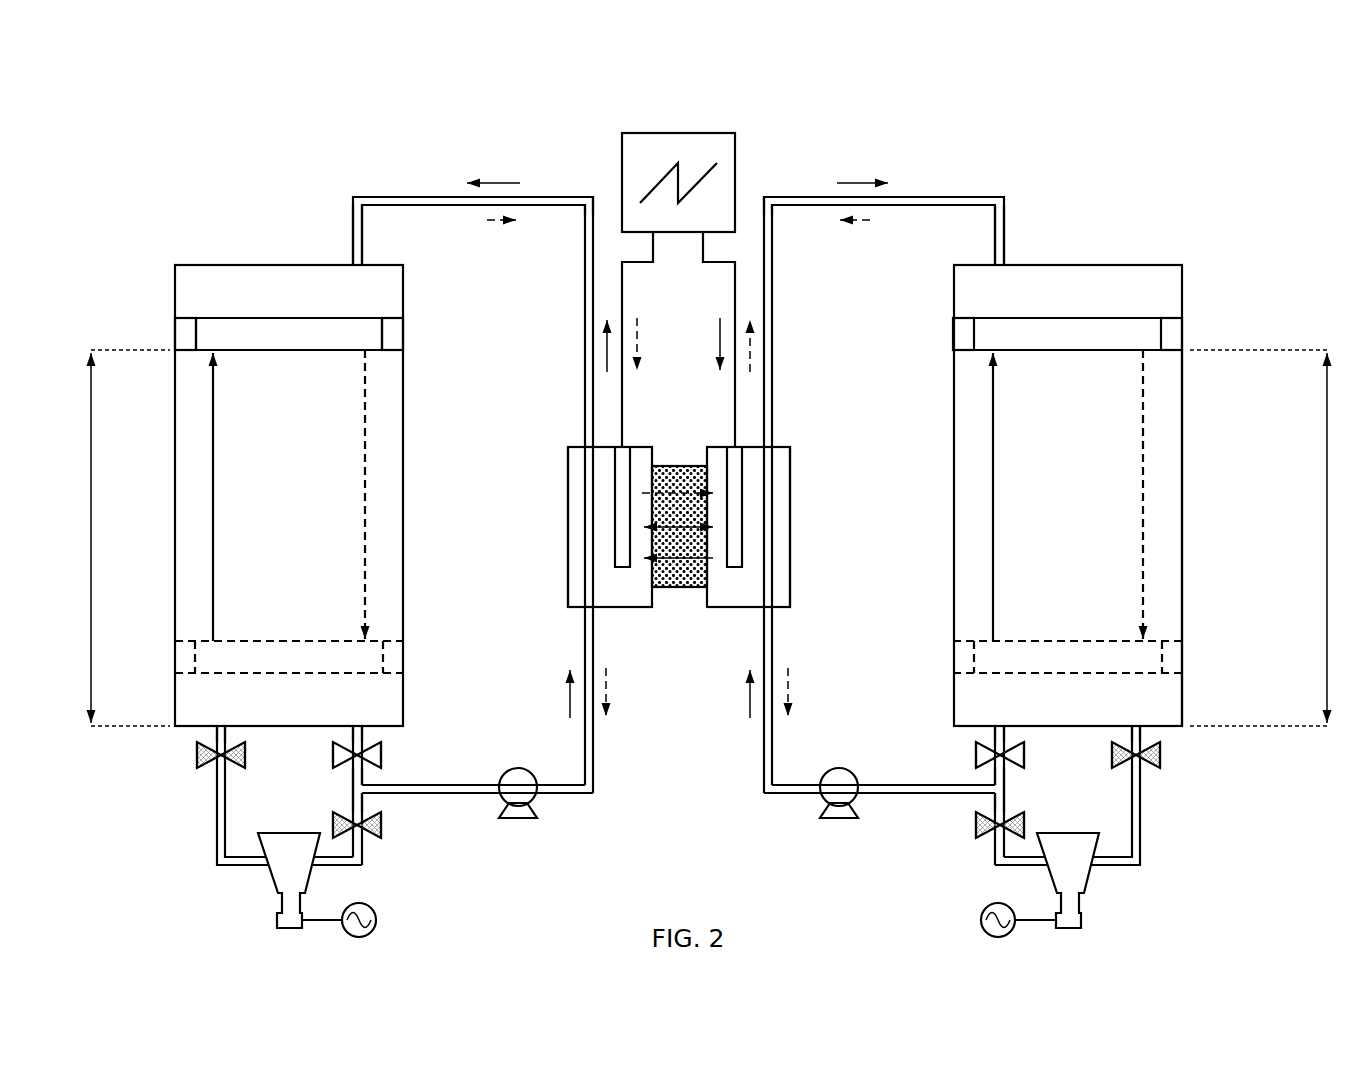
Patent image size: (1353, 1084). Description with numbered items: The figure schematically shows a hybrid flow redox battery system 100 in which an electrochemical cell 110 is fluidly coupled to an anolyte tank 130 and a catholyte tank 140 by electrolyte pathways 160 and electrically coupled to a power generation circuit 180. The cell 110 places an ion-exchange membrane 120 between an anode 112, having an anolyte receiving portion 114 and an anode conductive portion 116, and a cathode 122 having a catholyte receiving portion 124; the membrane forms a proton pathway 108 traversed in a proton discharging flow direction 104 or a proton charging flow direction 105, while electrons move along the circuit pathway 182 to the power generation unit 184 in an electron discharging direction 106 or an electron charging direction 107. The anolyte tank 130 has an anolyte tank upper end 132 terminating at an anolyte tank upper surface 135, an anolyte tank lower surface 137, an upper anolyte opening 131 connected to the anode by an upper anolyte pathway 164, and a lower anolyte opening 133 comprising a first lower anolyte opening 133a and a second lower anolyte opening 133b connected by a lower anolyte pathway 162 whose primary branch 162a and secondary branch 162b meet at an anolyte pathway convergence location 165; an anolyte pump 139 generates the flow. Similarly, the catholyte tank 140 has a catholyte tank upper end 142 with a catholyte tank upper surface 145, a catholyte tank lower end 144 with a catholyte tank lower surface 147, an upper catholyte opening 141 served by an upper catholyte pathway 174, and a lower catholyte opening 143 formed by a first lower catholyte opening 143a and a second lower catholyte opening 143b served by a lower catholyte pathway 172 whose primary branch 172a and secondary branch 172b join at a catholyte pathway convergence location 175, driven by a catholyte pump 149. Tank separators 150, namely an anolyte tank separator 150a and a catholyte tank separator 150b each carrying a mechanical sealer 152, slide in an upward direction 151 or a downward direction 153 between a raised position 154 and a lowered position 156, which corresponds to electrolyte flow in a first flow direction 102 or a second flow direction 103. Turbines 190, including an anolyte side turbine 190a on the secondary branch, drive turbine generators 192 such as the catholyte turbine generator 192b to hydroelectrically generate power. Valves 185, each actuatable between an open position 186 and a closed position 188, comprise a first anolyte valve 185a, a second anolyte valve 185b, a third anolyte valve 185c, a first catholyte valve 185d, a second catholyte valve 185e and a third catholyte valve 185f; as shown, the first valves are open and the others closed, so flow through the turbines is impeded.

The hybrid flow redox battery system 100 is at (1216, 147).
The first flow direction 102 is at (498, 180).
The second flow direction 103 is at (485, 222).
The proton discharging flow direction 104 is at (652, 561).
The proton charging flow direction 105 is at (680, 491).
The electron discharging direction 106 is at (606, 350).
The electron charging direction 107 is at (638, 338).
The proton pathway 108 is at (652, 529).
The electrochemical cell 110 is at (690, 601).
The anode 112 is at (562, 586).
The anolyte receiving portion 114 is at (568, 515).
The anode conductive portion 116 is at (615, 472).
The ion-exchange membrane 120 is at (665, 590).
The cathode 122 is at (795, 586).
The catholyte receiving portion 124 is at (790, 534).
The anolyte tank 130 is at (160, 698).
The upper anolyte opening 131 is at (362, 266).
The anolyte tank upper end 132 is at (172, 264).
The lower anolyte opening 133 is at (343, 700).
The first lower anolyte opening 133a is at (360, 728).
The second lower anolyte opening 133b is at (226, 728).
The anolyte tank upper surface 135 is at (298, 265).
The anolyte tank lower surface 137 is at (298, 730).
The anolyte pump 139 is at (518, 820).
The catholyte tank 140 is at (1206, 614).
The upper catholyte opening 141 is at (995, 266).
The catholyte tank upper end 142 is at (1185, 264).
The lower catholyte opening 143 is at (1014, 700).
The first lower catholyte opening 143a is at (996, 728).
The second lower catholyte opening 143b is at (1130, 728).
The catholyte tank lower end 144 is at (1194, 675).
The catholyte tank upper surface 145 is at (1059, 265).
The catholyte tank lower surface 147 is at (1059, 730).
The catholyte pump 149 is at (839, 820).
The tank separators 150 is at (170, 330).
The anolyte tank separator 150a is at (270, 318).
The catholyte tank separator 150b is at (1085, 318).
The upward direction 151 is at (214, 481).
The mechanical sealer 152 is at (175, 341).
The downward direction 153 is at (364, 516).
The raised position 154 is at (290, 354).
The lowered position 156 is at (269, 640).
The electrolyte pathways 160 is at (758, 758).
The lower anolyte pathway 162 is at (475, 796).
The primary branch 162a is at (483, 785).
The secondary branch 162b is at (217, 853).
The upper anolyte pathway 164 is at (420, 206).
The anolyte pathway convergence location 165 is at (353, 789).
The lower catholyte pathway 172 is at (793, 801).
The primary branch 172a is at (874, 785).
The secondary branch 172b is at (1140, 853).
The upper catholyte pathway 174 is at (936, 206).
The catholyte pathway convergence location 175 is at (1003, 789).
The power generation circuit 180 is at (749, 126).
The circuit pathway 182 is at (734, 297).
The power generation unit 184 is at (710, 133).
The valves 185 is at (206, 777).
The first anolyte valve 185a is at (384, 758).
The second anolyte valve 185b is at (198, 772).
The third anolyte valve 185c is at (380, 834).
The first catholyte valve 185d is at (973, 758).
The second catholyte valve 185e is at (1159, 772).
The third catholyte valve 185f is at (977, 834).
The open position 186 is at (386, 755).
The closed position 188 is at (191, 751).
The turbines 190 is at (289, 932).
The anolyte side turbine 190a is at (277, 920).
The sensor assembly 192 is at (383, 931).
The catholyte turbine generator 192b is at (377, 919).